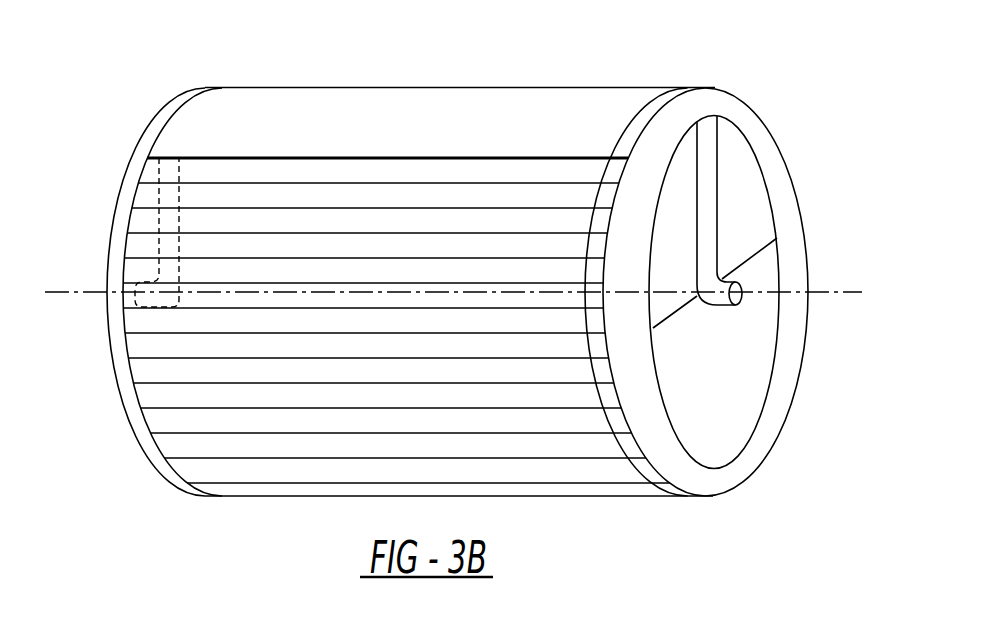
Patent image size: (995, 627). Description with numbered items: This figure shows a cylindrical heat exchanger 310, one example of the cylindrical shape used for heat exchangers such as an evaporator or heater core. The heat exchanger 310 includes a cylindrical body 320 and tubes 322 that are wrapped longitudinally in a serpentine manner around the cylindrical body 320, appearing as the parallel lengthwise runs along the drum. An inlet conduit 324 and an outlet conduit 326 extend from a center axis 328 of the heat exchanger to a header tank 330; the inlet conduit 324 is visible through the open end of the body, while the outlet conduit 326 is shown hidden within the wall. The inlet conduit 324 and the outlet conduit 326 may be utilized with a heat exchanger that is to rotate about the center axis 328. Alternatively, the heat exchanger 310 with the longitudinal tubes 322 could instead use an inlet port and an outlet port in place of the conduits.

The heat exchanger 310 is at (792, 105).
The cylindrical body 320 is at (800, 382).
The tubes 322 is at (553, 423).
The inlet conduit 324 is at (717, 189).
The outlet conduit 326 is at (160, 195).
The center axis 328 is at (840, 293).
The header tank 330 is at (455, 117).